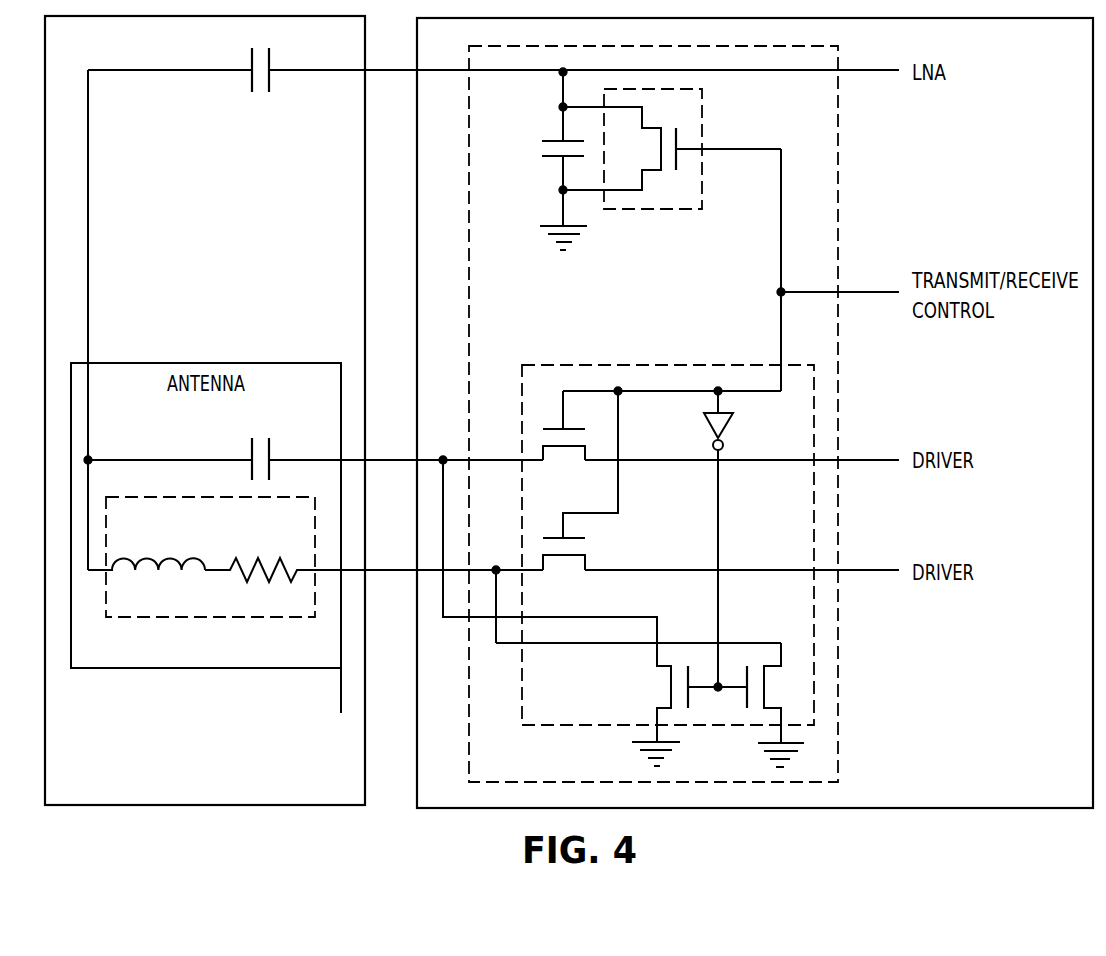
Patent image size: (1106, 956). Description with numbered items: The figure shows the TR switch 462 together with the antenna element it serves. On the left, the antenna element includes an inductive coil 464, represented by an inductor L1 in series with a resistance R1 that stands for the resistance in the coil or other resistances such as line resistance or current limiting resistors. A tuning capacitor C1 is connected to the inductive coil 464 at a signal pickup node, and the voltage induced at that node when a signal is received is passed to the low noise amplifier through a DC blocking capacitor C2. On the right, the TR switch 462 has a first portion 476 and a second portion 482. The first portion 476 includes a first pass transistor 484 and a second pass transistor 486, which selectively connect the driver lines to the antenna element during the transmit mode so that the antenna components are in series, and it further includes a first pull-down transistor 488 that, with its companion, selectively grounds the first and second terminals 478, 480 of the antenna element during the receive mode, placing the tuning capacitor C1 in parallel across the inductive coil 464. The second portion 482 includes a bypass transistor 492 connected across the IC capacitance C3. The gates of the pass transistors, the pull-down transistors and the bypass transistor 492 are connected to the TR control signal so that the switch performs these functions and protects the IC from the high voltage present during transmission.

The TR switch 462 is at (838, 136).
The inductive coil 464 is at (201, 577).
The first portion of the TR switch 476 is at (669, 365).
The first terminal of the antenna element 478 is at (391, 570).
The second terminal of the antenna element 480 is at (391, 460).
The second portion of the TR switch 482 is at (702, 122).
The first pass transistor 484 is at (577, 470).
The second pass transistor 486 is at (579, 577).
The first pull-down transistor 488 is at (648, 698).
The bypass transistor 492 is at (660, 191).
The tuning capacitor C1 is at (260, 445).
The DC blocking capacitor C2 is at (493, 85).
The IC capacitance C3 is at (557, 159).
The inductor L1 is at (146, 549).
The resistance R1 is at (252, 555).